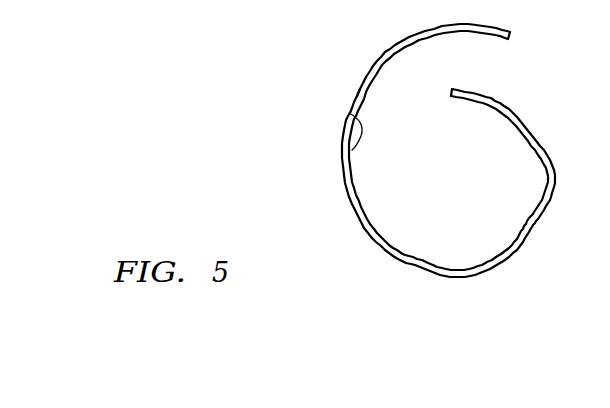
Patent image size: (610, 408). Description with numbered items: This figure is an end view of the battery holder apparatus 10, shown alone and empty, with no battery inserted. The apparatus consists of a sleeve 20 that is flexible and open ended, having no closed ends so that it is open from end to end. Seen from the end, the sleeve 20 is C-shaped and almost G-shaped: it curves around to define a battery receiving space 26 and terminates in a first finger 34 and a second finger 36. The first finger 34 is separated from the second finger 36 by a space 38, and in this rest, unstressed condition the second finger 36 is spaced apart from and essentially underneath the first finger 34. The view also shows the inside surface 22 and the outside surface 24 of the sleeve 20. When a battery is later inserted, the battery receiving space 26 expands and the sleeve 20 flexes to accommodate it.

The battery holder apparatus 10 is at (255, 37).
The sleeve 20 is at (392, 258).
The inside surface 22 is at (349, 113).
The outside surface 24 is at (351, 90).
The battery receiving space 26 is at (475, 208).
The first finger 34 is at (512, 33).
The second finger 36 is at (500, 104).
The space 38 is at (497, 67).